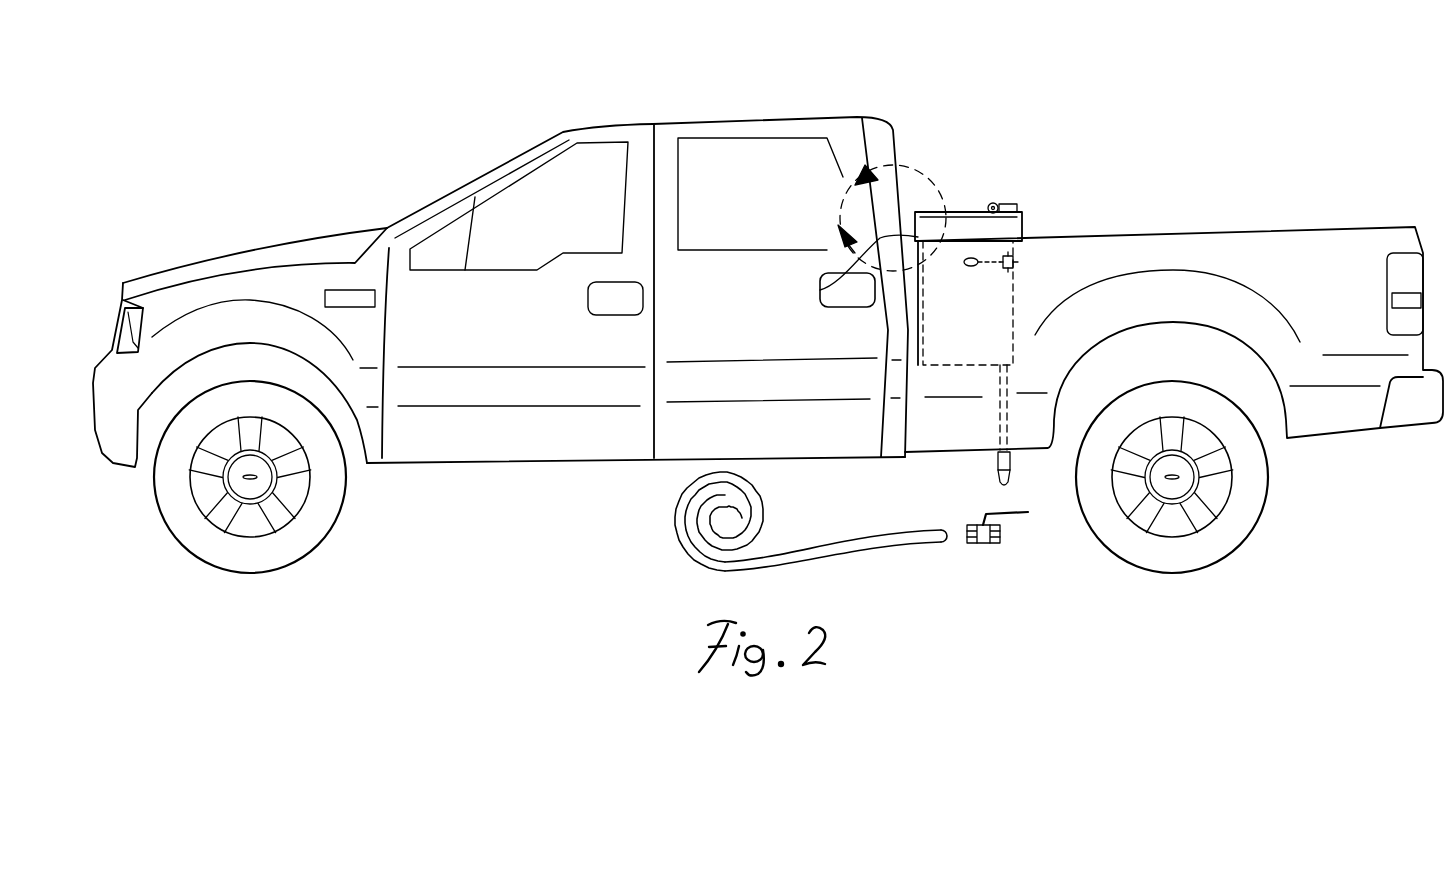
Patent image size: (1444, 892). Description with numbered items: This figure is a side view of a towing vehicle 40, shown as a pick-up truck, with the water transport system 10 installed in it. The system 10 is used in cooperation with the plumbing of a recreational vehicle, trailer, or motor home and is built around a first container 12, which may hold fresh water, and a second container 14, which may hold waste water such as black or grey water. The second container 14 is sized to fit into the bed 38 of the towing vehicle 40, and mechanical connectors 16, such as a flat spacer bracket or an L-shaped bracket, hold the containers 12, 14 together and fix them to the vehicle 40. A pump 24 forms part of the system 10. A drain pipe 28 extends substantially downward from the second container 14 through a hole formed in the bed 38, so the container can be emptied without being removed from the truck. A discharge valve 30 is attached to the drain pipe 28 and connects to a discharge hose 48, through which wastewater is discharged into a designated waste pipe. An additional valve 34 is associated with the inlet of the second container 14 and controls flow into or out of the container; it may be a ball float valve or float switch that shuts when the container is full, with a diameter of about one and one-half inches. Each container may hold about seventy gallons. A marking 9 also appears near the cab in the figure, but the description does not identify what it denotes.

The rotation direction arrows 9 is at (853, 209).
The water transport system 10 is at (925, 130).
The first container 12 is at (967, 212).
The second container 14 is at (1013, 354).
The mechanical connectors 16 is at (820, 290).
The pump 24 is at (997, 204).
The drain pipe 28 is at (998, 420).
The discharge valve 30 is at (982, 545).
The valve 34 is at (1018, 258).
The bed 38 is at (1098, 200).
The towing vehicle 40 is at (397, 147).
The discharge hose 48 is at (810, 552).